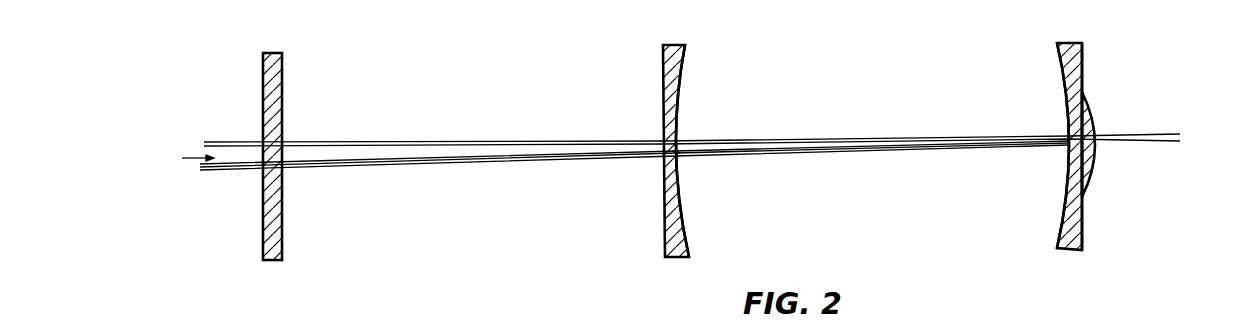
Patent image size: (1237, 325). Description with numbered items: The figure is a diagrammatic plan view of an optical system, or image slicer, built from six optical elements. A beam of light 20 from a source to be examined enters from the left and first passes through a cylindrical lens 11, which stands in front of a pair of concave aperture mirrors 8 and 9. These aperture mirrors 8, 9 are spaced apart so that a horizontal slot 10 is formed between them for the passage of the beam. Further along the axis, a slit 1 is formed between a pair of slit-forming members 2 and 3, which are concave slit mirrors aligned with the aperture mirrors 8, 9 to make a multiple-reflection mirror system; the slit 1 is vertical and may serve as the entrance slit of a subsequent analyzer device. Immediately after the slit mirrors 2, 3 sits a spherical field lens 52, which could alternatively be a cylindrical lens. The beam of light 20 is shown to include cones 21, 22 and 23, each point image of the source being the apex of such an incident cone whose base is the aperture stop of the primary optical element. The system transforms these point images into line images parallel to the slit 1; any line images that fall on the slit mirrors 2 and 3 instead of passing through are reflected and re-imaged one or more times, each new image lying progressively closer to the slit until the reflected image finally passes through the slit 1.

The slit 1 is at (1068, 146).
The slit-forming member 2 is at (1068, 92).
The slit-forming member 3 is at (1063, 211).
The aperture mirror 8 is at (678, 106).
The aperture mirror 9 is at (680, 194).
The slot 10 is at (677, 151).
The cylindrical lens 11 is at (281, 101).
The beam of light 20 is at (435, 154).
The cone 21 is at (358, 158).
The cone 22 is at (414, 164).
The cone 23 is at (466, 165).
The spherical lens 52 is at (1097, 177).